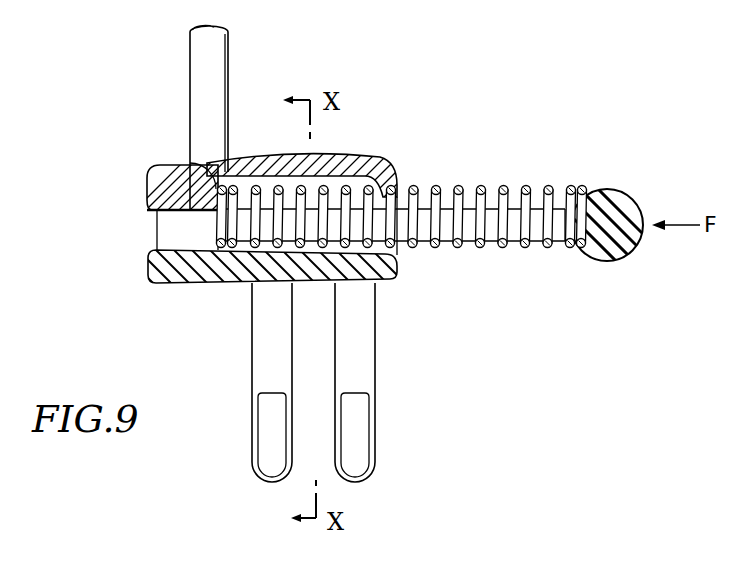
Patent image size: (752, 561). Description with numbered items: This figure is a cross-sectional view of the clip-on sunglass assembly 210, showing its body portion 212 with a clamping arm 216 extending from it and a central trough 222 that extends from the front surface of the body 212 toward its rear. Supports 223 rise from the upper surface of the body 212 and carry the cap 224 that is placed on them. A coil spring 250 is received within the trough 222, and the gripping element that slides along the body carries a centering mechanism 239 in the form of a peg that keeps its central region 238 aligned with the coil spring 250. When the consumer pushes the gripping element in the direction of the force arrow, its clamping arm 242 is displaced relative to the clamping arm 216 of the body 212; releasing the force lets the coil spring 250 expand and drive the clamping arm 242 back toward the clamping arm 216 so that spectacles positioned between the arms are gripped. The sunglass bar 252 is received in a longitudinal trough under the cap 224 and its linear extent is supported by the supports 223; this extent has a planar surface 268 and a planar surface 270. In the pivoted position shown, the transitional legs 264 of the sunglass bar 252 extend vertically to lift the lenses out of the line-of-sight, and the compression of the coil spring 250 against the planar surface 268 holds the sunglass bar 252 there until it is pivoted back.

The assembly 210 is at (410, 160).
The body portion 212 is at (185, 282).
The clamping arm 216 is at (376, 354).
The central trough 222 is at (400, 255).
The supports 223 is at (163, 230).
The cap 224 is at (330, 163).
The central region 238 is at (628, 200).
The centering mechanism 239 is at (590, 232).
The clamping arm 242 is at (252, 363).
The coil spring 250 is at (480, 191).
The sunglass bar 252 is at (214, 103).
The transitional legs 264 is at (215, 53).
The planar surface 268 is at (190, 192).
The planar surface 270 is at (212, 183).